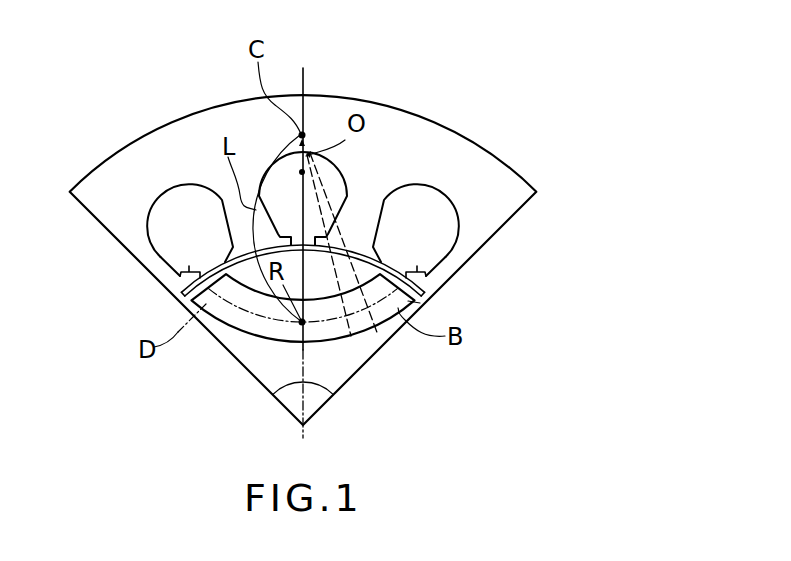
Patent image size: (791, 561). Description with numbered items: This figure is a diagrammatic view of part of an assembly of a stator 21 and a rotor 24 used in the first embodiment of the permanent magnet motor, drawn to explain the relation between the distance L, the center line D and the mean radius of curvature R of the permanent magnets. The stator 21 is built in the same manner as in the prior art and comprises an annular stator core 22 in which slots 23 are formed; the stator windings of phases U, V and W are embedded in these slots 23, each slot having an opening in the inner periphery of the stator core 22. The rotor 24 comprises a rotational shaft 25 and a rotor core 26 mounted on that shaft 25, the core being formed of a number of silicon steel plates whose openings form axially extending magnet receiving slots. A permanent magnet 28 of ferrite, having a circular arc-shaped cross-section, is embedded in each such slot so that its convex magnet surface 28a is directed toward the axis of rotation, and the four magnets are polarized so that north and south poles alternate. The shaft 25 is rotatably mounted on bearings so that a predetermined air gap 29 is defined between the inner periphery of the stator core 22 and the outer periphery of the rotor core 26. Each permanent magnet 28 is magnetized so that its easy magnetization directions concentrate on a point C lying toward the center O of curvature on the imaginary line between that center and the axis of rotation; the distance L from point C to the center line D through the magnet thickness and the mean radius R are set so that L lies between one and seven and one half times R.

The stator 21 is at (396, 105).
The stator core 22 is at (448, 138).
The slots 23 is at (452, 212).
The rotor 24 is at (381, 361).
The rotational shaft 25 is at (289, 406).
The rotor core 26 is at (247, 360).
The permanent magnet 28 is at (413, 302).
The convex surface of permanent magnet 28a is at (331, 345).
The air gap 29 is at (425, 287).